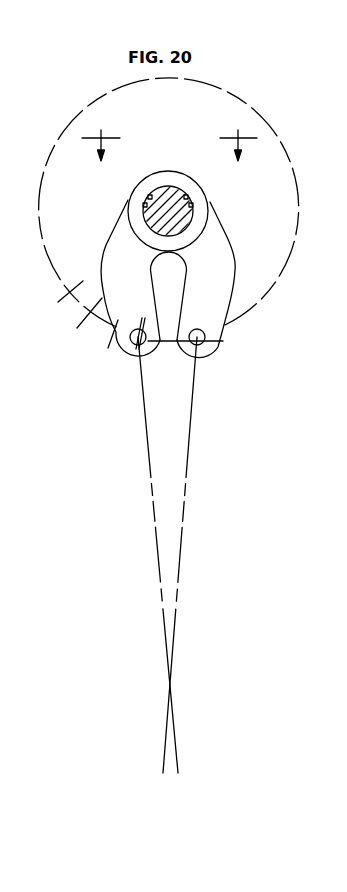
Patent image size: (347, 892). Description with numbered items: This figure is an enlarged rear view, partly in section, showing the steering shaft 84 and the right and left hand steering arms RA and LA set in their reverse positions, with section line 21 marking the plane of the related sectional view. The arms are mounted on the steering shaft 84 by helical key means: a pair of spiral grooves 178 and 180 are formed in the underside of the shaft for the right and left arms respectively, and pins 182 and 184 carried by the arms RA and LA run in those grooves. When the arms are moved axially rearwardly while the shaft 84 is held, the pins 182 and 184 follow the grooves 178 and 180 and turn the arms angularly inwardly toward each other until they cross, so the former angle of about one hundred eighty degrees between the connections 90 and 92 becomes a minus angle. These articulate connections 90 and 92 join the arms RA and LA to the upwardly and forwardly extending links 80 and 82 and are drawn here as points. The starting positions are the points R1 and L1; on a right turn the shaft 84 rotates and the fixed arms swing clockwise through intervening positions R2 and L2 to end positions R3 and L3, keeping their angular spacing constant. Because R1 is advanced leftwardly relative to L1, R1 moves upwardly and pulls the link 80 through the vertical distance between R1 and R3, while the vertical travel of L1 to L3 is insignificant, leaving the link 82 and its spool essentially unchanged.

The section line 21 is at (169, 136).
The right hand link 80 is at (148, 445).
The left hand link 82 is at (190, 445).
The steering shaft 84 is at (168, 197).
The articulate connection 90 is at (137, 350).
The articulate connection 92 is at (205, 354).
The helical groove 178 is at (186, 197).
The helical groove 180 is at (150, 197).
The pin 182 is at (193, 205).
The pin 184 is at (145, 205).
The right hand steering arm RA is at (108, 244).
The left hand steering arm LA is at (225, 247).
The starting position of right arm R1 is at (130, 351).
The intervening position of right arm R2 is at (82, 322).
The end position of right arm R3 is at (63, 298).
The starting position of left arm L1 is at (196, 347).
The intervening position of left arm L2 is at (144, 351).
The end position of left arm L3 is at (113, 340).